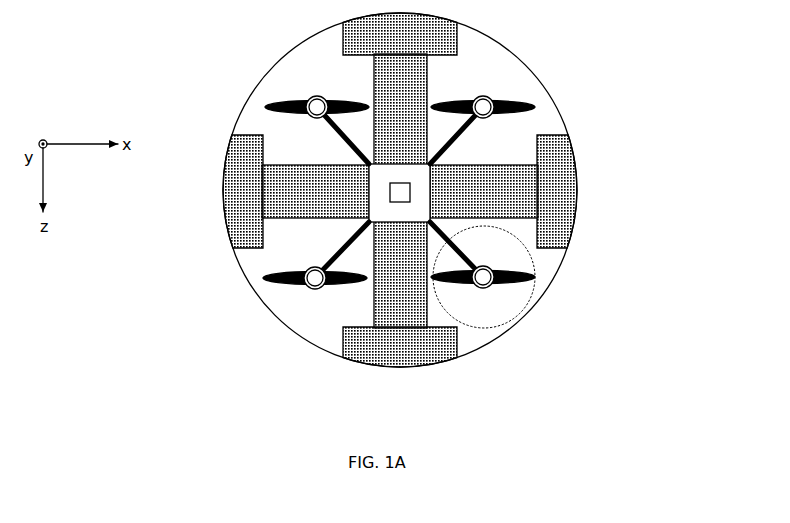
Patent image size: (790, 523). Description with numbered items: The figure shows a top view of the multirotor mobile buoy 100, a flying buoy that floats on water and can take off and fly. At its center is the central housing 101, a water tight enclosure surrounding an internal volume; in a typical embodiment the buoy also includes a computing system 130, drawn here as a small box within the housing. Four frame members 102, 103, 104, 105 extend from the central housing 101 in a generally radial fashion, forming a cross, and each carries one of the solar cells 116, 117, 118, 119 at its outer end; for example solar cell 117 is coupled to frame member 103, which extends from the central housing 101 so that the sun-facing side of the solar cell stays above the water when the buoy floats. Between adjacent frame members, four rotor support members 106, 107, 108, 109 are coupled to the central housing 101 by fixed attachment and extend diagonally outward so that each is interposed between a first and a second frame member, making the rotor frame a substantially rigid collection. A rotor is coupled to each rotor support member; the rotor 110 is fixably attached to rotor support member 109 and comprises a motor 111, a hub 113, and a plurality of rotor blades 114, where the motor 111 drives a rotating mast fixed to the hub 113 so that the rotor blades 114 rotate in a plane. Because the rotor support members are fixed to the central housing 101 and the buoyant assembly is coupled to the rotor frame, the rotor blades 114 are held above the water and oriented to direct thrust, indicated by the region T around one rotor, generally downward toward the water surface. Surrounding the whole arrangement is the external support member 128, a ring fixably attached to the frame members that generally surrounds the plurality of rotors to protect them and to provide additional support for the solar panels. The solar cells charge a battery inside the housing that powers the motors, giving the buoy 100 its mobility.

The multirotor mobile buoy 100 is at (252, 62).
The external support member 128 is at (541, 83).
The central housing 101 is at (378, 170).
The computing system 130 is at (410, 187).
The frame member 104 is at (447, 33).
The frame member 103 is at (560, 140).
The frame member 105 is at (243, 240).
The frame member 102 is at (346, 352).
The solar cell 118 is at (360, 29).
The solar cell 117 is at (562, 172).
The solar cell 119 is at (236, 172).
The solar cell 116 is at (421, 354).
The rotor support member 108 is at (336, 120).
The rotor support member 107 is at (467, 121).
The rotor support member 109 is at (343, 247).
The rotor support member 106 is at (466, 259).
The rotor 110 is at (293, 293).
The motor 111 is at (331, 289).
The hub 113 is at (308, 290).
The rotor blades 114 is at (263, 282).
The thrust region T is at (537, 290).